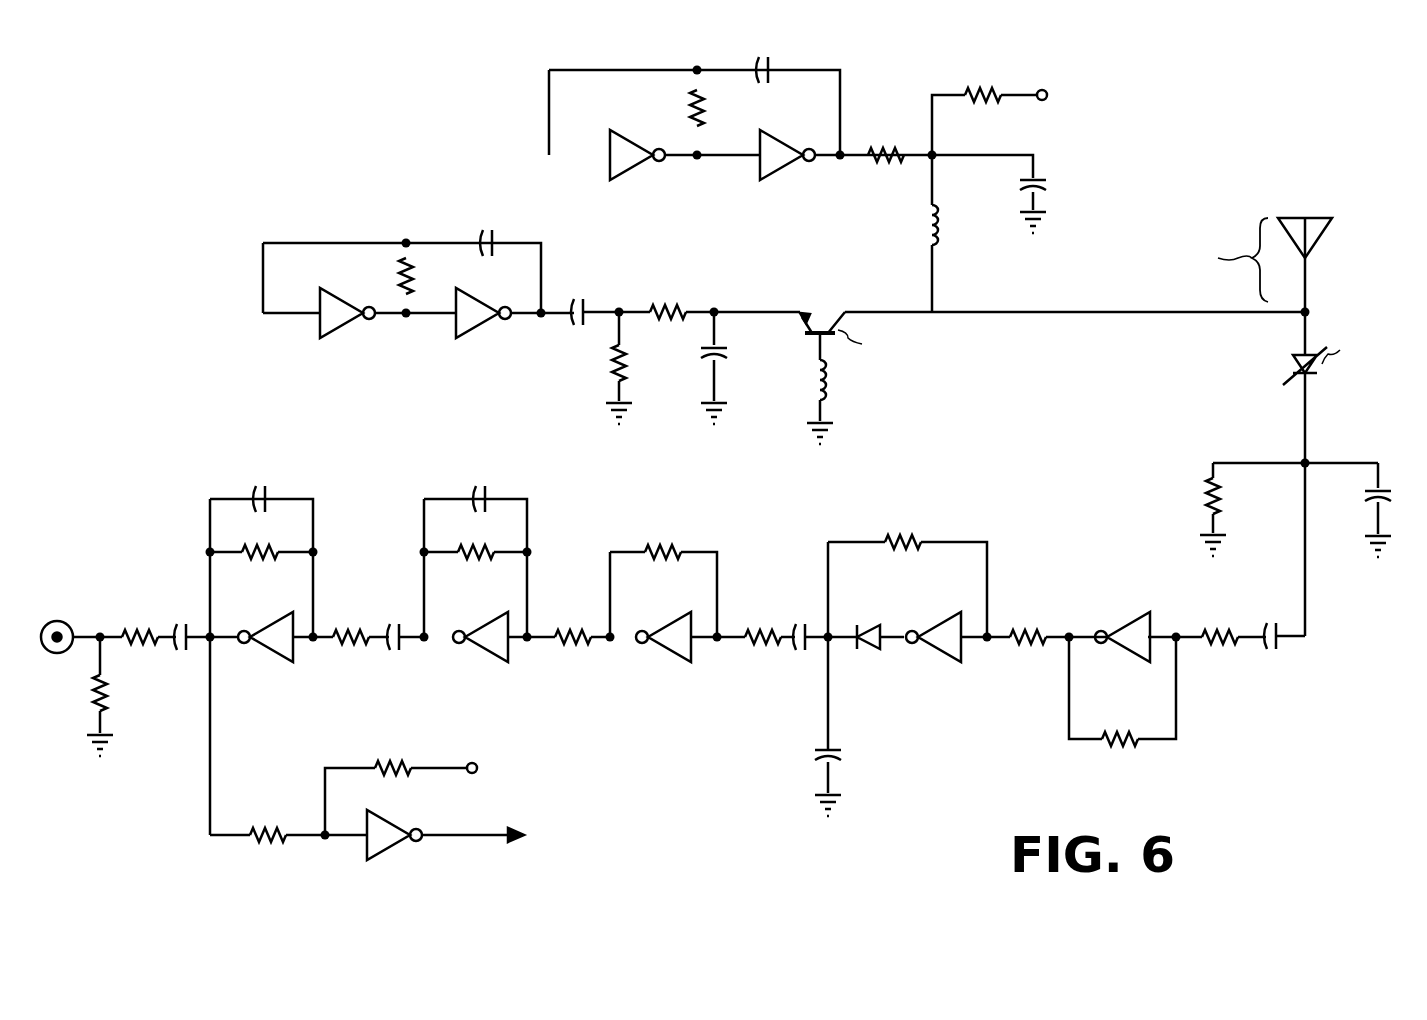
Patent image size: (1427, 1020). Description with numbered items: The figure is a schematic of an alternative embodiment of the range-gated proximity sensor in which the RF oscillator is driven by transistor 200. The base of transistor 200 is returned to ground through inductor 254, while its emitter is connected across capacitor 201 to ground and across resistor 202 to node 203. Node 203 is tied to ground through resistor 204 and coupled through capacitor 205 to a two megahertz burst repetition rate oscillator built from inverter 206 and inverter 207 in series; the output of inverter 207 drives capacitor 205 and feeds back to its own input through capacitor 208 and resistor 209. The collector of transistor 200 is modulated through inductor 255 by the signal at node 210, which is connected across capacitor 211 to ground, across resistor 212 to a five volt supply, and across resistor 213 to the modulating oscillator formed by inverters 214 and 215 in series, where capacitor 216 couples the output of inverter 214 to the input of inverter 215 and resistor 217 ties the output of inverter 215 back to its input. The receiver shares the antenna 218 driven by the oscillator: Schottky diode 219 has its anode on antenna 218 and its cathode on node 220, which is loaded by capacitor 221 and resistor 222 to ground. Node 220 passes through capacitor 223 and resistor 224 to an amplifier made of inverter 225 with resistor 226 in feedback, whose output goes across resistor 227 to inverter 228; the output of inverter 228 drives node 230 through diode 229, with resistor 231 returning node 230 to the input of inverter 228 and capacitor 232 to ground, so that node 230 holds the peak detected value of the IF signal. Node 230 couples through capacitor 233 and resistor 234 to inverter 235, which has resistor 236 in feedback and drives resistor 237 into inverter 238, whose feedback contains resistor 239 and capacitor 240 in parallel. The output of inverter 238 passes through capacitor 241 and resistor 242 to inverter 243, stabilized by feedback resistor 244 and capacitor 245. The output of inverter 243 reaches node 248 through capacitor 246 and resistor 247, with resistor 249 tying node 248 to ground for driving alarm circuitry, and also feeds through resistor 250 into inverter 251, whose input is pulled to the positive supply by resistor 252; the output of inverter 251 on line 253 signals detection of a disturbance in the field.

The transistor 200 is at (820, 316).
The capacitor 201 is at (722, 348).
The resistor 202 is at (678, 306).
The node 203 is at (624, 317).
The resistor 204 is at (618, 362).
The capacitor 205 is at (542, 336).
The inverter 206 is at (470, 343).
The inverter 207 is at (345, 343).
The capacitor 208 is at (495, 236).
The resistor 209 is at (406, 260).
The node 210 is at (938, 162).
The capacitor 211 is at (1045, 185).
The resistor 212 is at (994, 92).
The resistor 213 is at (889, 150).
The inverter 214 is at (790, 186).
The inverter 215 is at (655, 186).
The capacitor 216 is at (773, 66).
The resistor 217 is at (690, 110).
The antenna 218 is at (1307, 212).
The Schottky diode 219 is at (1290, 368).
The node 220 is at (1300, 462).
The capacitor 221 is at (1379, 478).
The resistor 222 is at (1206, 492).
The capacitor 223 is at (1280, 645).
The resistor 224 is at (1220, 645).
The inverter 225 is at (1132, 660).
The resistor 226 is at (1124, 742).
The resistor 227 is at (1035, 631).
The inverter 228 is at (948, 660).
The diode 229 is at (868, 628).
The node 230 is at (834, 642).
The resistor 231 is at (903, 541).
The capacitor 232 is at (840, 748).
The capacitor 233 is at (793, 652).
The resistor 234 is at (755, 632).
The inverter 235 is at (668, 660).
The resistor 236 is at (662, 550).
The resistor 237 is at (576, 655).
The inverter 238 is at (478, 662).
The resistor 239 is at (484, 552).
The capacitor 240 is at (492, 496).
The capacitor 241 is at (388, 654).
The resistor 242 is at (352, 629).
The inverter 243 is at (262, 662).
The resistor 244 is at (272, 552).
The capacitor 245 is at (268, 496).
The capacitor 246 is at (176, 624).
The resistor 247 is at (141, 623).
The node 248 is at (66, 625).
The resistor 249 is at (108, 696).
The resistor 250 is at (268, 842).
The inverter 251 is at (402, 852).
The resistor 252 is at (380, 762).
The line 253 is at (490, 848).
The inductor 254 is at (832, 378).
The inductor 255 is at (926, 240).